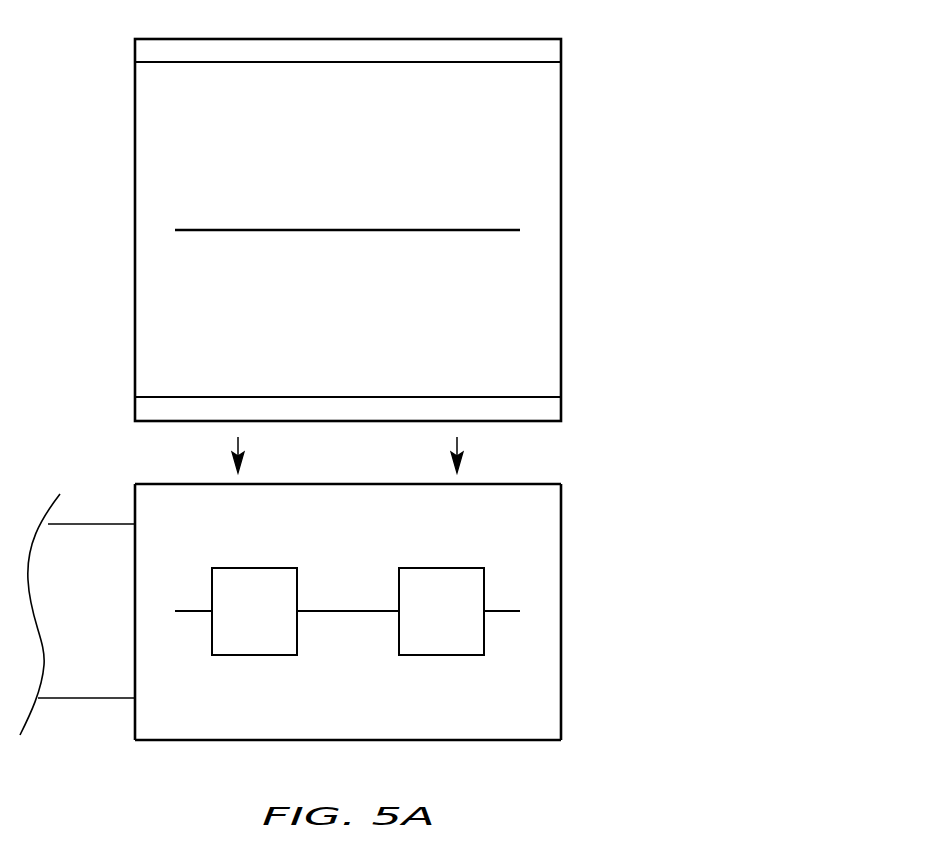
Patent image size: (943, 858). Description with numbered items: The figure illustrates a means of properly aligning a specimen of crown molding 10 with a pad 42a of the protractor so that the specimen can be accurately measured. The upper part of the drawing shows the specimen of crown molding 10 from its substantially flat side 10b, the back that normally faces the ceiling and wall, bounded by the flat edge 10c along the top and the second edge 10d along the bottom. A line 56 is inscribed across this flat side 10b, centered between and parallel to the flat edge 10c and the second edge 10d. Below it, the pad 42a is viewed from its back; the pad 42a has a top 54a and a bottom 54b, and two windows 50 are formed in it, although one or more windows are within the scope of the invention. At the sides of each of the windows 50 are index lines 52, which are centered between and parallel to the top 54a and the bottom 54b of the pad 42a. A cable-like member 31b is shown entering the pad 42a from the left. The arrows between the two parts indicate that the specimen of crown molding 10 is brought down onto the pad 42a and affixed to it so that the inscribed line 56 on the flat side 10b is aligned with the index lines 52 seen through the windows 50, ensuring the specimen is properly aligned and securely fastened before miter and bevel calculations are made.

The crown molding 10 is at (390, 230).
The flat side 10b is at (505, 284).
The flat edge 10c is at (545, 38).
The second edge 10d is at (545, 421).
The line 56 is at (389, 230).
The pad 42a is at (562, 629).
The top of pad 54a is at (541, 484).
The bottom of pad 54b is at (532, 740).
The cable 31b is at (84, 698).
The windows 50 is at (254, 568).
The index lines 52 is at (184, 611).